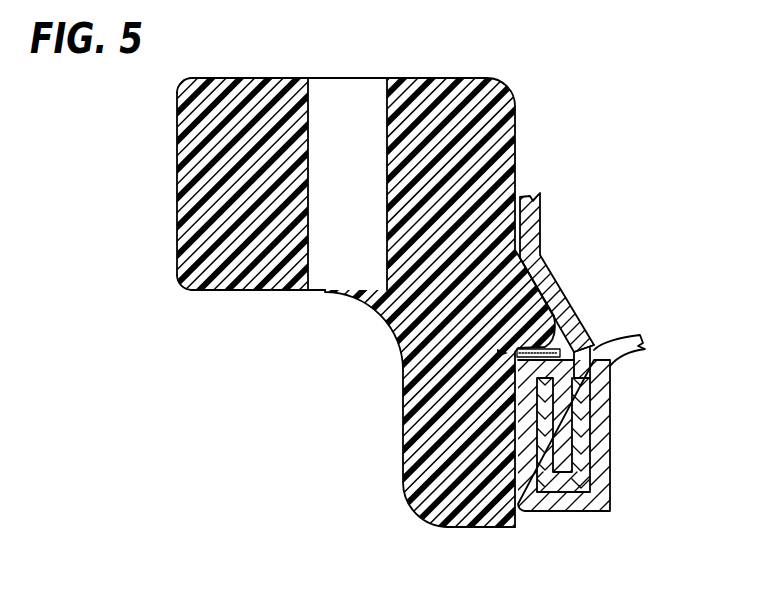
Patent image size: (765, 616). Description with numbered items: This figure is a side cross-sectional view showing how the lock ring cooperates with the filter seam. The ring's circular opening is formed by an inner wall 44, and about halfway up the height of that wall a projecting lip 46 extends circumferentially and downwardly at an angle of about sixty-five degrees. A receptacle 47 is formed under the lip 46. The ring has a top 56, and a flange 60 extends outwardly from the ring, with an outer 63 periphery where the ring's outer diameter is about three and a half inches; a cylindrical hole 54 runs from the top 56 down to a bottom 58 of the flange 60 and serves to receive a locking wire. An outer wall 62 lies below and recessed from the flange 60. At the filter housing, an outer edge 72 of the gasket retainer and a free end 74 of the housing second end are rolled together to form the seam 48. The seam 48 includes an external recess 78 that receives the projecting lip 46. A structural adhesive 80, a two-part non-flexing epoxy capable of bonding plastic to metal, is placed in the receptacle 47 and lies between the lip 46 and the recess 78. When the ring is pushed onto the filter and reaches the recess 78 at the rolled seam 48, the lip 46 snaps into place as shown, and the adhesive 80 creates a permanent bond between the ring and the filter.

The inner wall 44 is at (518, 172).
The projecting lip 46 is at (546, 292).
The receptacle 47 is at (403, 450).
The seam 48 is at (598, 358).
The cylindrical hole 54 is at (385, 207).
The top 56 is at (247, 78).
The bottom 58 is at (245, 292).
The flange 60 is at (213, 203).
The outer wall 62 is at (403, 378).
The outer periphery 63 is at (177, 152).
The outer edge 72 is at (600, 468).
The free end 74 is at (547, 472).
The external recess 78 is at (556, 340).
The structural adhesive 80 is at (550, 357).